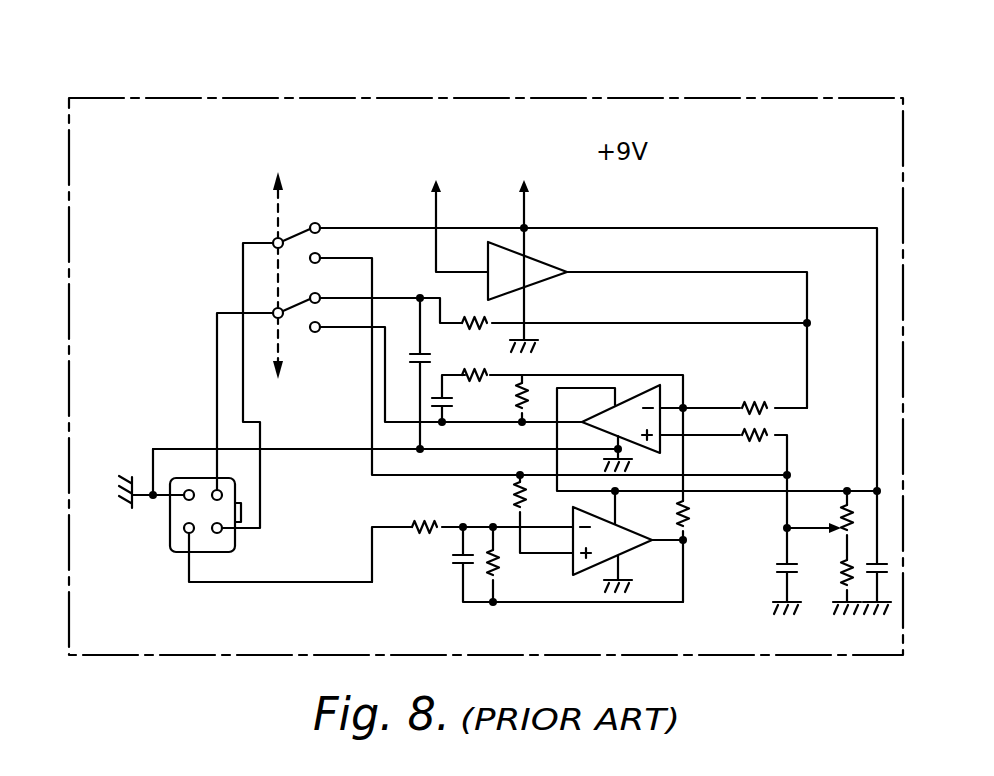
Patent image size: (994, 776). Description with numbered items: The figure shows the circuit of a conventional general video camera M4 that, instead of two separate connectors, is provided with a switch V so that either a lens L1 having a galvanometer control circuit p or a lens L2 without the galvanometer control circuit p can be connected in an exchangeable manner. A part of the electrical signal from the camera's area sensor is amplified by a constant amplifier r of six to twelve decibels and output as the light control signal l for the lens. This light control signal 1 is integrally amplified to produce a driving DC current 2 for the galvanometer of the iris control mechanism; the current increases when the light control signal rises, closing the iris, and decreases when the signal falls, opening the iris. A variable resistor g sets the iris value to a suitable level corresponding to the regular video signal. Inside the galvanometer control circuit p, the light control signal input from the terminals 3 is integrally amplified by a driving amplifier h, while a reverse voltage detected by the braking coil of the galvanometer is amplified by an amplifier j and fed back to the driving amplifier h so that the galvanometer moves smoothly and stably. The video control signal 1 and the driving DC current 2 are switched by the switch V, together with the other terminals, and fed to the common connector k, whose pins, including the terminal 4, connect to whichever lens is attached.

The conventional general video camera M4 is at (563, 100).
The lens having galvanometer control circuit L1 is at (276, 168).
The lens without galvanometer control circuit L2 is at (278, 389).
The switch V is at (260, 282).
The constant amplifier r is at (543, 268).
The light control signal l is at (807, 293).
The driving amplifier h is at (626, 402).
The amplifier j is at (633, 551).
The variable resistor g is at (831, 510).
The galvanometer control circuit p is at (536, 609).
The common connector k is at (180, 553).
The light control signal 1 is at (222, 532).
The driving DC current 2 is at (185, 531).
The terminals 3 is at (223, 492).
The connector pin 4 is at (189, 489).